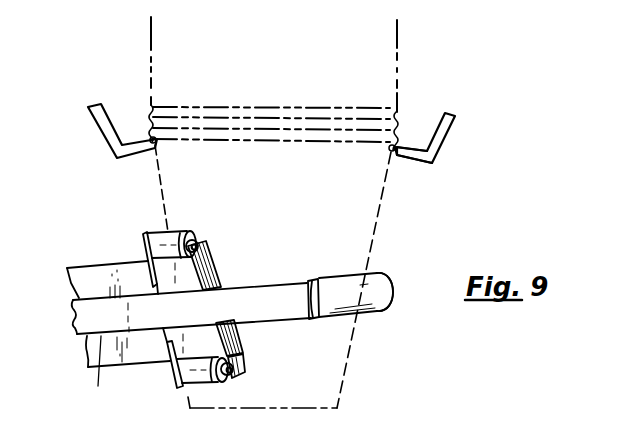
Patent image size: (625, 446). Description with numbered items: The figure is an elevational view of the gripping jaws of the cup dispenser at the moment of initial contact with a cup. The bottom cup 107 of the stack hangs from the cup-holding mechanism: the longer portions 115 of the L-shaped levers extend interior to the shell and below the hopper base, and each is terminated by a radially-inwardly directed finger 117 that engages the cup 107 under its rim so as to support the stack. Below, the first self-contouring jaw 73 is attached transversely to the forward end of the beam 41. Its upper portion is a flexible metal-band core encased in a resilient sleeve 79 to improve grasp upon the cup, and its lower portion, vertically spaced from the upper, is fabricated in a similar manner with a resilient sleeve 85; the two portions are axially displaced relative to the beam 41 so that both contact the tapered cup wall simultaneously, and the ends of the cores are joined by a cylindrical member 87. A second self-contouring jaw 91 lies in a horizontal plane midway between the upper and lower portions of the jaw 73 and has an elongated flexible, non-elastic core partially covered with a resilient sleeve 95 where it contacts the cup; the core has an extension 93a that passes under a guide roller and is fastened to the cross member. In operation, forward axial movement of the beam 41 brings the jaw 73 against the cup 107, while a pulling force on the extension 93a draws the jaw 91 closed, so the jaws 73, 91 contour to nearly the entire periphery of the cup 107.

The beam 41 is at (82, 285).
The first self-contouring jaw 73 is at (138, 311).
The resilient sleeve 79 is at (158, 232).
The resilient sleeve 85 is at (177, 388).
The cylindrical member 87 is at (208, 263).
The second self-contouring jaw 91 is at (389, 263).
The core extension 93a is at (100, 372).
The resilient sleeve 95 is at (372, 315).
The bottom cup 107 is at (278, 212).
The longer portion of L-shaped lever 115 is at (448, 139).
The finger 117 is at (407, 153).